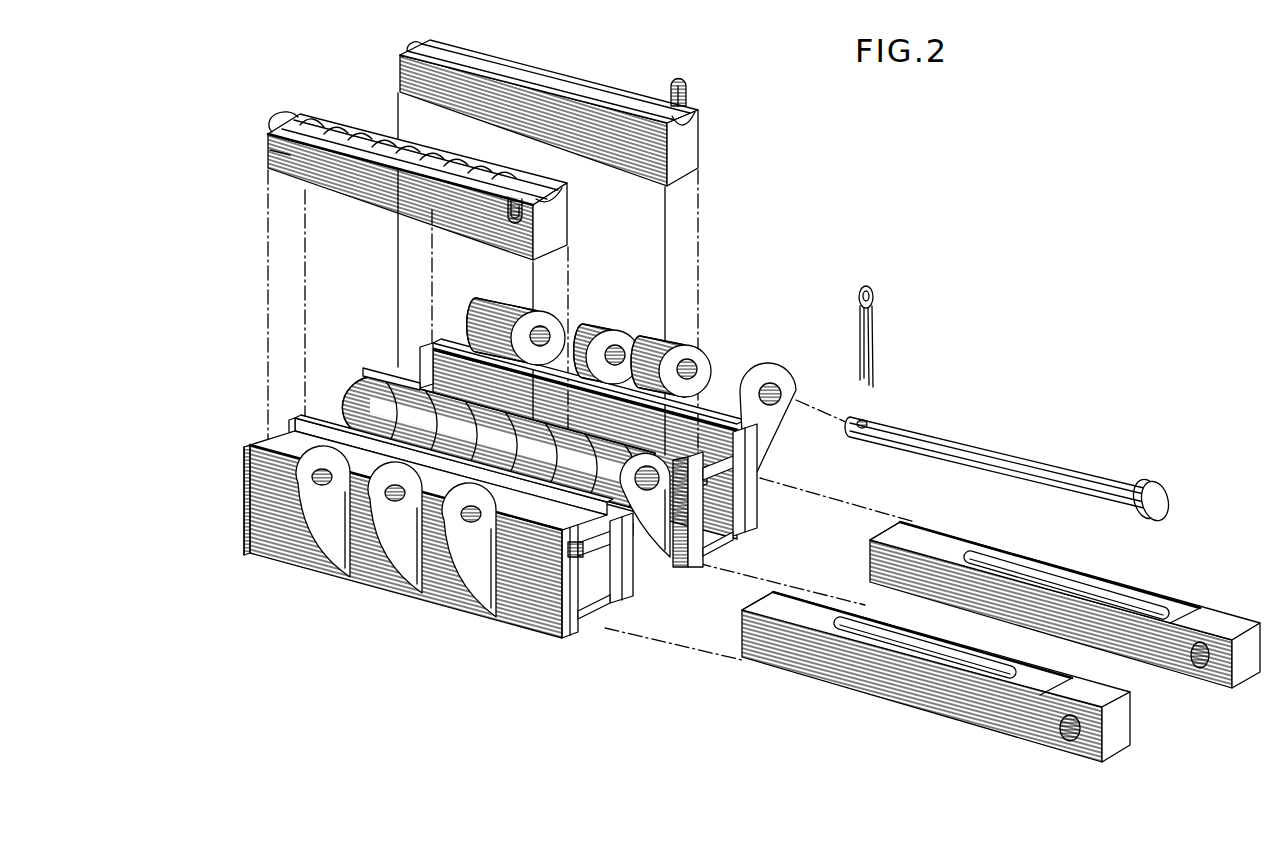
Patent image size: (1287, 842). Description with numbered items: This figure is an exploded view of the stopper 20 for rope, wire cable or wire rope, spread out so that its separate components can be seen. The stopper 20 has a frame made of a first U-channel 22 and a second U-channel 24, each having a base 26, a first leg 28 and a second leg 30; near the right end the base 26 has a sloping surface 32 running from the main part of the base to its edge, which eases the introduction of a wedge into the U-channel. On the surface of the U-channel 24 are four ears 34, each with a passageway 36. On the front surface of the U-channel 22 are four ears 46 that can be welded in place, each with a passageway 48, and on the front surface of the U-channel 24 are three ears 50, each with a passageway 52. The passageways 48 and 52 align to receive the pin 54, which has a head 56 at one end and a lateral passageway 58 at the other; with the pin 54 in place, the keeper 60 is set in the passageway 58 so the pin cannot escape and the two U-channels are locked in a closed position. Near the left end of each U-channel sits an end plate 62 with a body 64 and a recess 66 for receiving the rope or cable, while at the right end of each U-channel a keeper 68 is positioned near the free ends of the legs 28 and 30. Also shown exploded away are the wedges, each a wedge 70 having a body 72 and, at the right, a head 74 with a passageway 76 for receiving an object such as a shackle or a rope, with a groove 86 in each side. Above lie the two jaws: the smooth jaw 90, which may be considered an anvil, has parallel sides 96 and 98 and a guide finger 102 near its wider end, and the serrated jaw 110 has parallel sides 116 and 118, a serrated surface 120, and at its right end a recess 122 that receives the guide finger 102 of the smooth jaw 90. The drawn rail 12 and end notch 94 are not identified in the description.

The rail 12 is at (987, 651).
The stopper 20 is at (243, 486).
The first U-channel 22 is at (445, 350).
The second U-channel 24 is at (541, 593).
The base 26 is at (735, 540).
The first leg 28 is at (747, 492).
The second leg 30 is at (700, 530).
The sloping surface 32 is at (750, 531).
The ears 34 is at (360, 392).
The passageway 36 is at (641, 484).
The ears 46 is at (503, 307).
The passageway 48 is at (773, 390).
The ears 50 is at (327, 573).
The passageway 52 is at (460, 516).
The pin 54 is at (955, 438).
The head 56 is at (1162, 490).
The lateral passageway 58 is at (868, 420).
The keeper 60 is at (875, 295).
The end plate 62 is at (243, 537).
The body 64 is at (244, 514).
The recess 66 is at (293, 424).
The keeper 68 is at (752, 458).
The wedge 70 is at (1142, 565).
The body 72 is at (917, 523).
The head 74 is at (1220, 617).
The passageway 76 is at (1197, 670).
The groove 86 is at (957, 553).
The smooth jaw 90 is at (527, 55).
The end notch 94 is at (705, 122).
The side 96 is at (500, 57).
The side 98 is at (400, 58).
The guide finger 102 is at (681, 80).
The serrated jaw 110 is at (497, 162).
The side 116 is at (373, 108).
The side 118 is at (270, 150).
The serrated surface 120 is at (553, 201).
The recess 122 is at (528, 216).